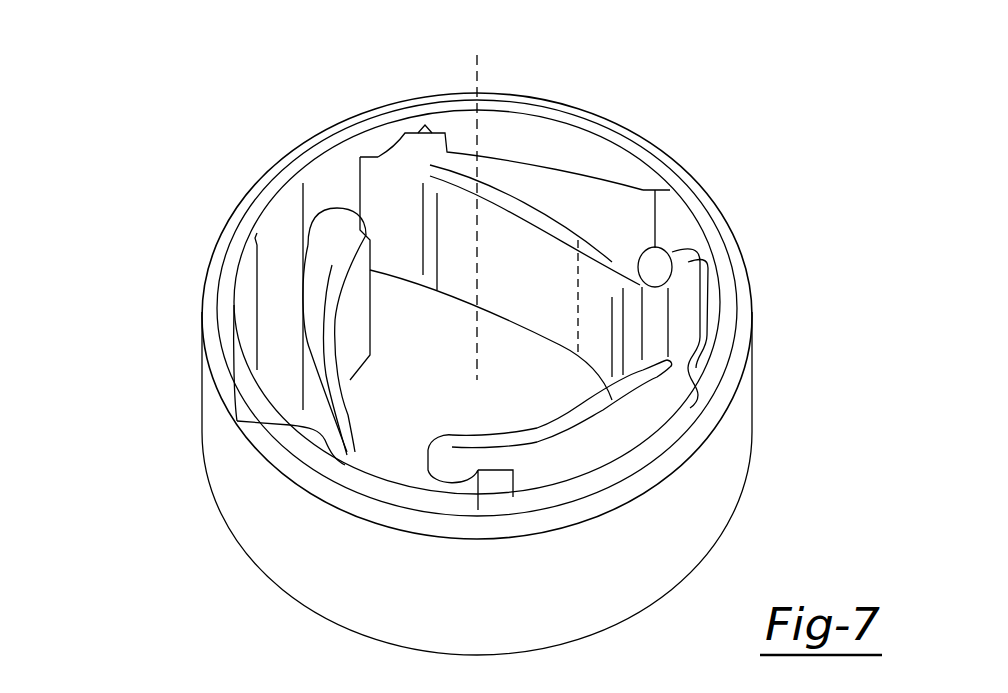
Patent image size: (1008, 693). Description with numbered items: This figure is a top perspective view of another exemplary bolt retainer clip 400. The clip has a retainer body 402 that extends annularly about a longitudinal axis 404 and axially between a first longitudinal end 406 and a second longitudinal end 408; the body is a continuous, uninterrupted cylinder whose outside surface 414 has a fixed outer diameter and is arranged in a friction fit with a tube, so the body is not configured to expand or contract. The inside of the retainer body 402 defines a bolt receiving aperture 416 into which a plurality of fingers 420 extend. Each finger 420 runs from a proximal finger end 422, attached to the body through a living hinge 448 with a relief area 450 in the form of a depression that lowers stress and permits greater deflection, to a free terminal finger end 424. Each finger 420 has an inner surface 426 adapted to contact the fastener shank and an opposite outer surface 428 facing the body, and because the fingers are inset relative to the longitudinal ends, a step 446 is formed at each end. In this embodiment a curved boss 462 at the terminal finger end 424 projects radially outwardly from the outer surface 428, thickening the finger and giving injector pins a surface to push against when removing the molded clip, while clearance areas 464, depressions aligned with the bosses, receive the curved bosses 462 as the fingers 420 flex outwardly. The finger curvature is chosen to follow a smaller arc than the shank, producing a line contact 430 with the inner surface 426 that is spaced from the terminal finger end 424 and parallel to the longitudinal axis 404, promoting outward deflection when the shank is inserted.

The bolt retainer clip 400 is at (172, 82).
The retainer body 402 is at (220, 256).
The longitudinal axis 404 is at (480, 62).
The first longitudinal end 406 is at (718, 282).
The second longitudinal end 408 is at (720, 540).
The outside surface 414 is at (257, 513).
The bolt receiving aperture 416 is at (462, 384).
The fingers 420 is at (426, 443).
The proximal finger end 422 is at (327, 413).
The terminal finger end 424 is at (367, 230).
The inner surface 426 is at (566, 259).
The outer surface 428 is at (297, 403).
The line contact 430 is at (577, 320).
The step 446 is at (425, 134).
The living hinge 448 is at (680, 400).
The relief area 450 is at (460, 137).
The curved boss 462 is at (334, 222).
The clearance areas 464 is at (268, 230).